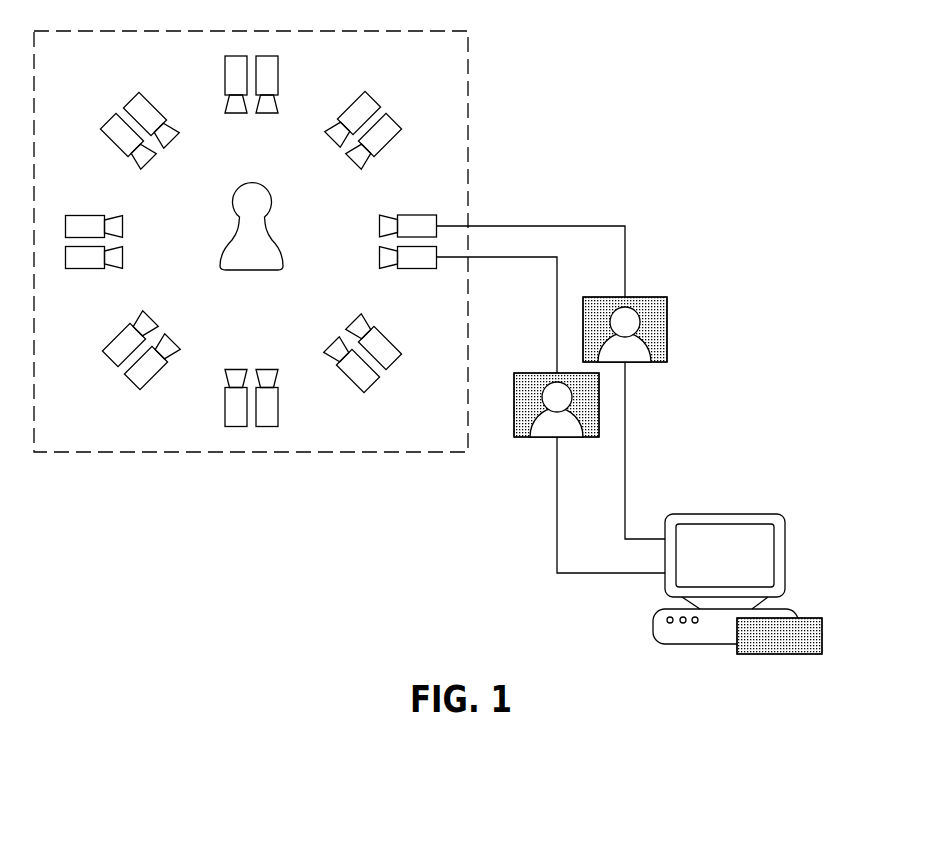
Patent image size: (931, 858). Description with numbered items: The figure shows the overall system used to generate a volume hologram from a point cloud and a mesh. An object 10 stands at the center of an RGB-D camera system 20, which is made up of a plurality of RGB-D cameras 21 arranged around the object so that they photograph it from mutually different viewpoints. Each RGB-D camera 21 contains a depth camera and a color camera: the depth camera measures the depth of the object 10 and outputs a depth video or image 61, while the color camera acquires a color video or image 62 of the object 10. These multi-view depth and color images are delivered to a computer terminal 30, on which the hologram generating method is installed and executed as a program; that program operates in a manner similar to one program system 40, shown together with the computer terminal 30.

The object 10 is at (272, 207).
The RGB-D camera system 20 is at (468, 93).
The RGB-D camera 21 is at (279, 74).
The computer terminal 30 is at (785, 553).
The program system 40 is at (822, 635).
The depth video or image 61 is at (667, 328).
The color video or image 62 is at (599, 409).